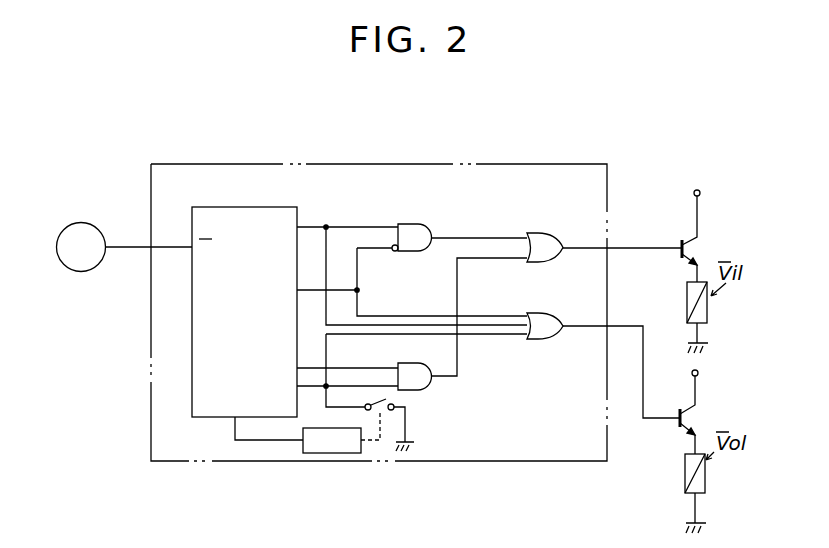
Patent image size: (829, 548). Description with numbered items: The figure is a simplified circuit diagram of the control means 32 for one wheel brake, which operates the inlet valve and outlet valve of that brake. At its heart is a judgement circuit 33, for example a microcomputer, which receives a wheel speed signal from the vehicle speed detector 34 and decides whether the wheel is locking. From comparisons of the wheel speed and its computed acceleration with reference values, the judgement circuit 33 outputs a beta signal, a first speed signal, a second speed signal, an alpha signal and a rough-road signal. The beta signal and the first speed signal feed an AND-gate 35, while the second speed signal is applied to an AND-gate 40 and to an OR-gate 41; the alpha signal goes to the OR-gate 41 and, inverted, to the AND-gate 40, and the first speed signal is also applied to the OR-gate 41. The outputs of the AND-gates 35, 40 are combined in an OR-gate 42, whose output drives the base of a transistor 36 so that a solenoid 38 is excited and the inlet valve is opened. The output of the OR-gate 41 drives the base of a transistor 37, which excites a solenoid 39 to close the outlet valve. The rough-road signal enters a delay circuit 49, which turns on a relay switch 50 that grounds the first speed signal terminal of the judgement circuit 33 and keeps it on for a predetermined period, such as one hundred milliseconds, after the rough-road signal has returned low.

The control means 32 is at (336, 162).
The judgement circuit 33 is at (192, 402).
The vehicle speed detector 34 is at (70, 258).
The AND-gate 35 is at (434, 366).
The transistor 36 is at (681, 246).
The transistor 37 is at (678, 424).
The solenoid 38 is at (707, 316).
The solenoid 39 is at (705, 484).
The AND-gate 40 is at (424, 224).
The OR-gate 41 is at (549, 339).
The OR-gate 42 is at (554, 238).
The delay circuit 49 is at (322, 453).
The relay switch 50 is at (392, 398).